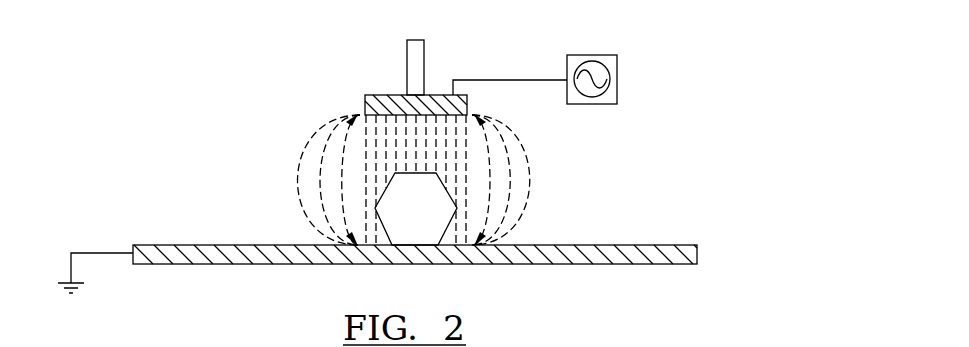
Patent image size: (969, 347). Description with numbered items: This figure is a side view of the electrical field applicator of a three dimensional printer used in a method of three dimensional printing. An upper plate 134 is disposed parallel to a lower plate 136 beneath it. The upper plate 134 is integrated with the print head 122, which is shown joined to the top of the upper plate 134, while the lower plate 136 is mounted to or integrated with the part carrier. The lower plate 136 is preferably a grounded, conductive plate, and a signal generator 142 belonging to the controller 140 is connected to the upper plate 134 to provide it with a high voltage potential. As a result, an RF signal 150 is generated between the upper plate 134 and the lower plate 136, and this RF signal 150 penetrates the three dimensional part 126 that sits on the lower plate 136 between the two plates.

The print head 122 is at (407, 66).
The three dimensional part 126 is at (453, 197).
The upper plate 134 is at (433, 95).
The lower plate 136 is at (655, 245).
The controller 140 is at (614, 72).
The signal generator 142 is at (591, 97).
The RF signal 150 is at (296, 163).